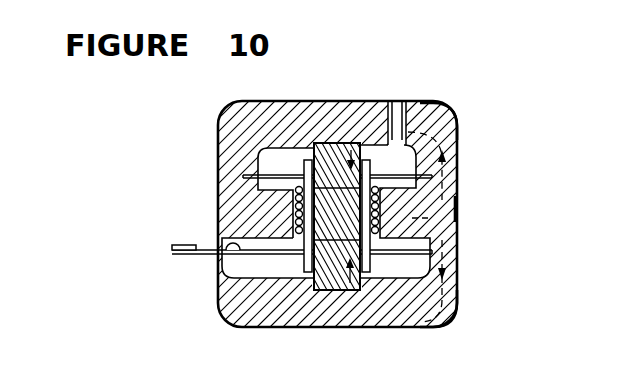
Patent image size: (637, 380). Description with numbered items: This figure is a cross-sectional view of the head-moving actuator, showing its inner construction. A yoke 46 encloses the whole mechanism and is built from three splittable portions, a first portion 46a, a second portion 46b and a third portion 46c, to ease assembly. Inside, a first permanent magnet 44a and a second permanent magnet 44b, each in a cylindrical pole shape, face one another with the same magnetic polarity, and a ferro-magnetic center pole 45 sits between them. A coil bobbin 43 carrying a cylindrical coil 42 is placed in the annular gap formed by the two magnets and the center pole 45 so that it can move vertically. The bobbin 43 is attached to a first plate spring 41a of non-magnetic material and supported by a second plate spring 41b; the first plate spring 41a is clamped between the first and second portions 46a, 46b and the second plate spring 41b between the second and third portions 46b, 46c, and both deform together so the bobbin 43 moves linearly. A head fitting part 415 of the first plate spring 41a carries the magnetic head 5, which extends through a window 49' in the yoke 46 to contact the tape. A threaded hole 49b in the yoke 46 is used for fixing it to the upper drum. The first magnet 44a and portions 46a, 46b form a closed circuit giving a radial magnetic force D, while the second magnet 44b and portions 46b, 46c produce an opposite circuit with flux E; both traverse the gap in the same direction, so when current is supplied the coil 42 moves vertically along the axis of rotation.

The magnetic head 5 is at (186, 245).
The first plate spring 41a is at (290, 250).
The second plate spring 41b is at (290, 190).
The cylindrical coil 42 is at (306, 168).
The coil bobbin 43 is at (303, 276).
The first permanent magnet 44a is at (346, 290).
The second permanent magnet 44b is at (350, 148).
The center pole 45 is at (330, 213).
The yoke 46 is at (417, 329).
The first portion of the yoke 46a is at (457, 300).
The second portion of the yoke 46b is at (457, 208).
The third portion of the yoke 46c is at (457, 122).
The window 49' is at (200, 267).
The threaded hole 49b is at (396, 100).
The head fitting part 415 is at (214, 247).
The magnetic flux E is at (458, 147).
The magnetic force D is at (456, 284).